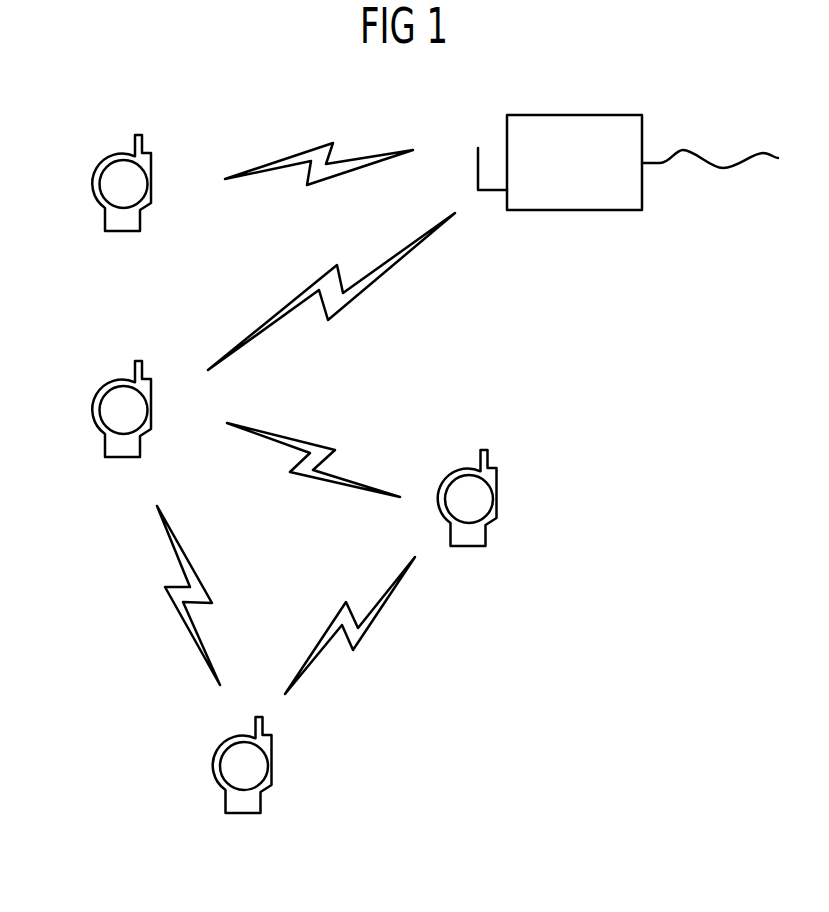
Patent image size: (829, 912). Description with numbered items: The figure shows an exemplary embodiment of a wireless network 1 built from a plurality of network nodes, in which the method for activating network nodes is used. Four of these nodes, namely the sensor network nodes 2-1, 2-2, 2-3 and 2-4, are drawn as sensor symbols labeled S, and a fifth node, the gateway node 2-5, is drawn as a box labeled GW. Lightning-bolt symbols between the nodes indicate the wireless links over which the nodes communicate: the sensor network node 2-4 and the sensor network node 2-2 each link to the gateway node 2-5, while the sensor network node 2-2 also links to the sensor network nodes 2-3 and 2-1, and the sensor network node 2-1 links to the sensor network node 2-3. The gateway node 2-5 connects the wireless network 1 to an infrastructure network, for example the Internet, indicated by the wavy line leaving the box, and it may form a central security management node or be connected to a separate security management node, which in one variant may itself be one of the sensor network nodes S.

The wireless network 1 is at (618, 479).
The sensor network node 2-1 is at (257, 768).
The sensor network node 2-2 is at (112, 410).
The sensor network node 2-3 is at (482, 499).
The sensor network node 2-4 is at (112, 184).
The gateway node 2-5 is at (573, 210).